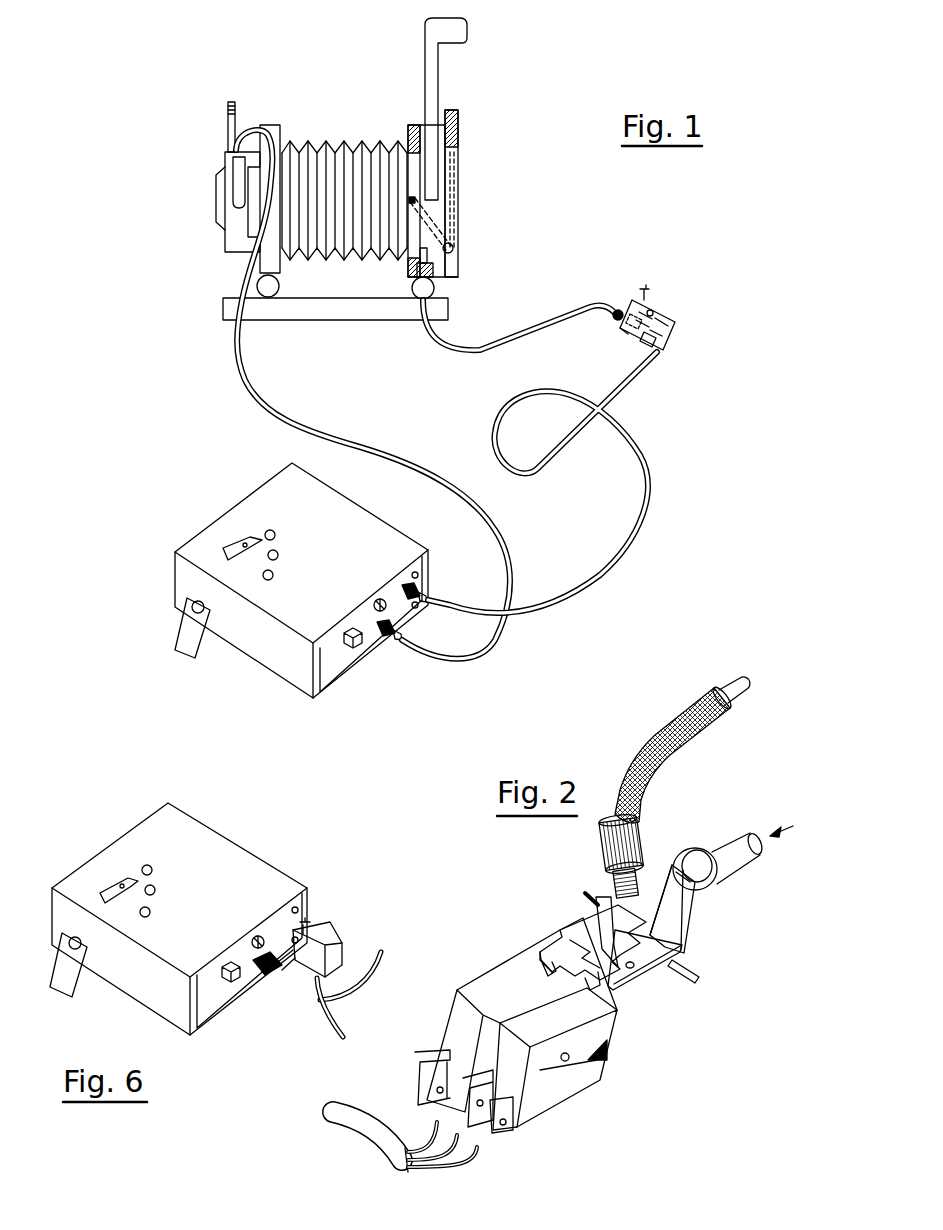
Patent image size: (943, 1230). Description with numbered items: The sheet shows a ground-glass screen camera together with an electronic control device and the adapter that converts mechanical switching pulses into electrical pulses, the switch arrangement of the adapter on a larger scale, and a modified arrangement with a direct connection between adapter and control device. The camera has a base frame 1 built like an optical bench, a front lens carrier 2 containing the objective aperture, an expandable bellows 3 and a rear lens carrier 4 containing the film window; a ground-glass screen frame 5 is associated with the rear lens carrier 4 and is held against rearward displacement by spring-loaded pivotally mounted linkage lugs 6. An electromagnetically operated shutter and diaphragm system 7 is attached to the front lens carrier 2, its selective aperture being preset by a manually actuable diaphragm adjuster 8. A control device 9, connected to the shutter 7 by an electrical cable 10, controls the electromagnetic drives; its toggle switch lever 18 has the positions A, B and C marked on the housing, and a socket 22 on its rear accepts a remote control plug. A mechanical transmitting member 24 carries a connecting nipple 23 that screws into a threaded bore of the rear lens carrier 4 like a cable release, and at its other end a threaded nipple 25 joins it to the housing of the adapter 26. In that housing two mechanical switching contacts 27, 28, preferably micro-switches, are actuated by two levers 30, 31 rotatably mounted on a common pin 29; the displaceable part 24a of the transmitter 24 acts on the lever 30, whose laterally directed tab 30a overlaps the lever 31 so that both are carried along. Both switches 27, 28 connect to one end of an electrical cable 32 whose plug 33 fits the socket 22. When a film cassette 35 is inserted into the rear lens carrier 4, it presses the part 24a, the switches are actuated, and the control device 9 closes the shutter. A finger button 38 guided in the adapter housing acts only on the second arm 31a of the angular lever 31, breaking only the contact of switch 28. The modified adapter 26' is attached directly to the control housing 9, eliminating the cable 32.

In FIG. 1, the base frame 1 is at (312, 310).
In FIG. 1, the front lens carrier 2 is at (276, 130).
In FIG. 1, the bellows 3 is at (340, 155).
In FIG. 1, the rear lens carrier 4 is at (410, 128).
In FIG. 1, the ground-glass screen frame 5 is at (460, 130).
In FIG. 1, the linkage lugs 6 is at (428, 222).
In FIG. 1, the shutter and diaphragm system 7 is at (238, 238).
In FIG. 1, the diaphragm adjuster 8 is at (230, 100).
In FIG. 1, the control device 9 is at (233, 520).
In FIG. 6, the control device 9 is at (168, 810).
In FIG. 1, the electrical cable 10 is at (315, 423).
In FIG. 6, the electrical cable 10 is at (287, 977).
In FIG. 1, the switch lever 18 is at (223, 557).
In FIG. 1, the socket 22 is at (425, 595).
In FIG. 1, the connecting nipple 23 is at (434, 290).
In FIG. 1, the mechanical transmitting member 24 is at (587, 308).
In FIG. 2, the mechanical transmitting member 24 is at (670, 742).
In FIG. 6, the mechanical transmitting member 24 is at (327, 1025).
In FIG. 2, the displaceable part 24a is at (607, 912).
In FIG. 1, the threaded nipple 25 is at (623, 308).
In FIG. 2, the threaded nipple 25 is at (617, 841).
In FIG. 1, the adapter 26 is at (698, 325).
In FIG. 6, the modified adapter 26' is at (320, 906).
In FIG. 1, the mechanical switching contact 27 is at (667, 340).
In FIG. 2, the mechanical switching contact 27 is at (470, 1033).
In FIG. 1, the mechanical switching contact 28 is at (634, 321).
In FIG. 2, the mechanical switching contact 28 is at (543, 1097).
In FIG. 2, the common pin 29 is at (678, 965).
In FIG. 2, the lever 30 is at (577, 938).
In FIG. 2, the laterally directed tab 30a is at (630, 987).
In FIG. 2, the lever 31 is at (643, 977).
In FIG. 2, the second arm 31a is at (675, 915).
In FIG. 1, the electrical cable 32 is at (650, 495).
In FIG. 2, the electrical cable 32 is at (380, 1153).
In FIG. 1, the plug 33 is at (430, 600).
In FIG. 1, the film cassette 35 is at (460, 28).
In FIG. 1, the finger button 38 is at (653, 292).
In FIG. 2, the finger button 38 is at (722, 853).